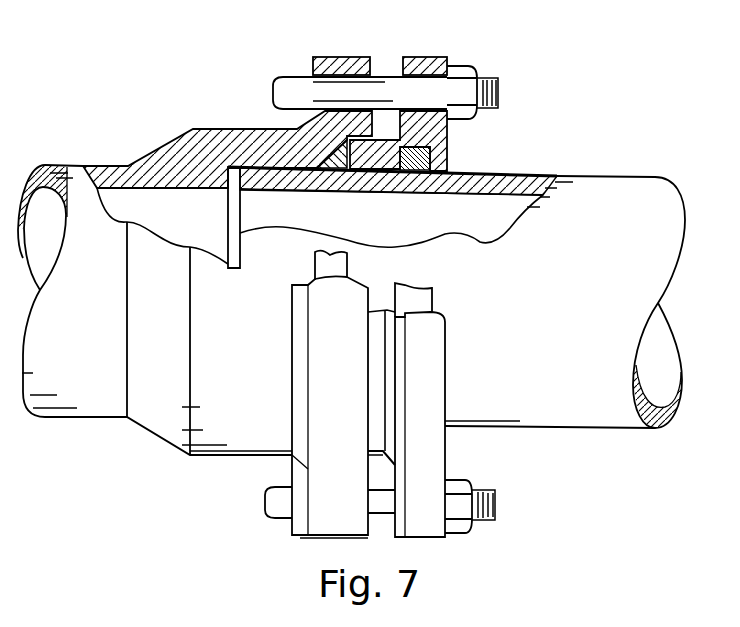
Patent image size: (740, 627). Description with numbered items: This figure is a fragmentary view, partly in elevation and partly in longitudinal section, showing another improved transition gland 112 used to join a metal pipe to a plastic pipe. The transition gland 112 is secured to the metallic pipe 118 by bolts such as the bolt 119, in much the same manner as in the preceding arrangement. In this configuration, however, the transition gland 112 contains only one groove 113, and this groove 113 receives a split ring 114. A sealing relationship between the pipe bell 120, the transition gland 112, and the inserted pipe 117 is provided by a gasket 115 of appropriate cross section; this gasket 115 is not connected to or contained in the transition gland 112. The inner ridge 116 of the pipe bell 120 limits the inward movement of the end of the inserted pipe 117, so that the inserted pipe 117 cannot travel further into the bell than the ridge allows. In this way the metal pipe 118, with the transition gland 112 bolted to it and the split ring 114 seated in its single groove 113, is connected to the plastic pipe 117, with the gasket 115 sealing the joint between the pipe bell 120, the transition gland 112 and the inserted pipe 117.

The transition gland 112 is at (418, 57).
The groove 113 is at (447, 145).
The split ring 114 is at (432, 160).
The gasket 115 is at (300, 128).
The inner ridge 116 is at (213, 173).
The inserted pipe 117 is at (630, 177).
The metallic pipe 118 is at (77, 177).
The bolts 119 is at (483, 78).
The pipe bell 120 is at (330, 57).